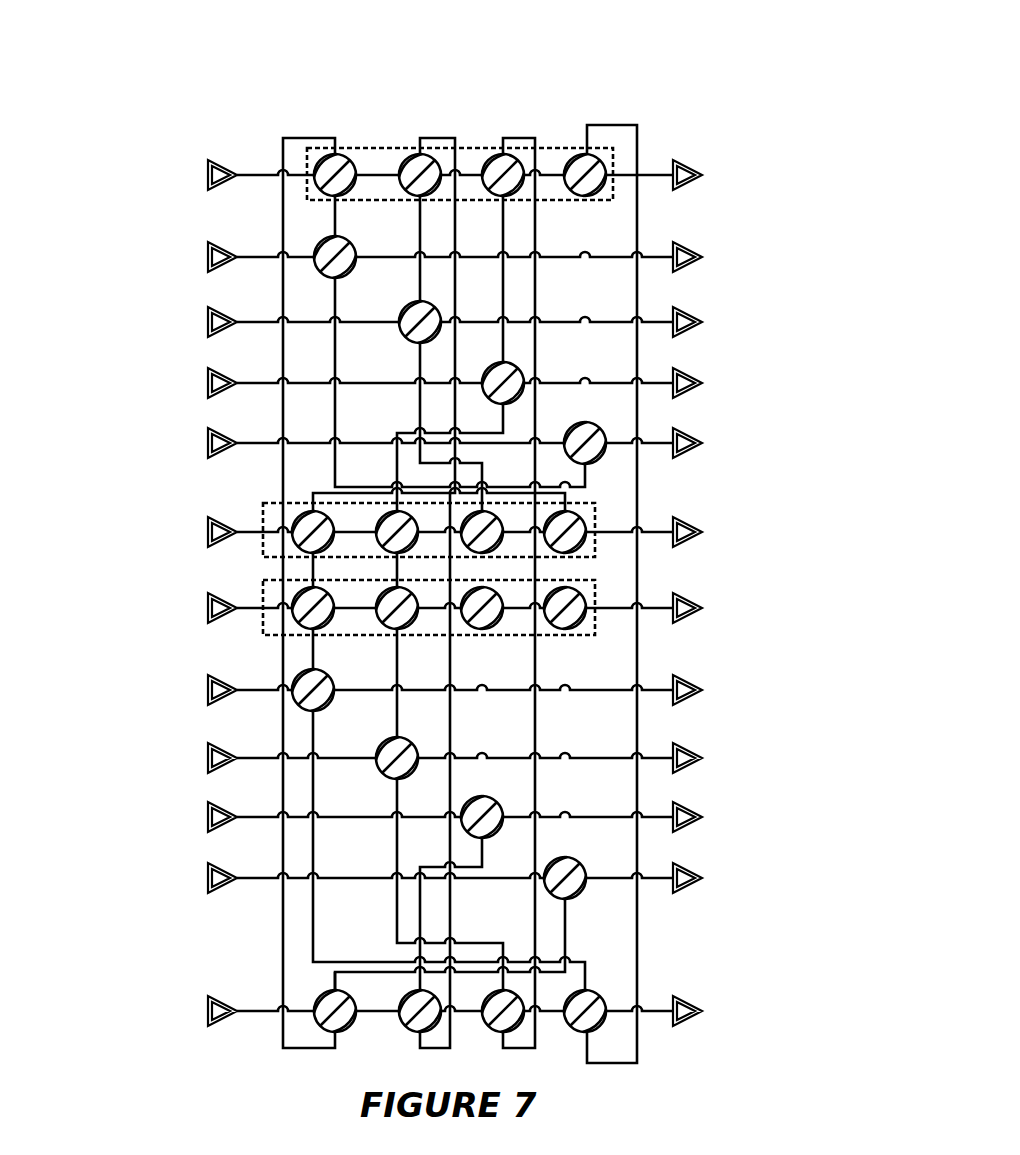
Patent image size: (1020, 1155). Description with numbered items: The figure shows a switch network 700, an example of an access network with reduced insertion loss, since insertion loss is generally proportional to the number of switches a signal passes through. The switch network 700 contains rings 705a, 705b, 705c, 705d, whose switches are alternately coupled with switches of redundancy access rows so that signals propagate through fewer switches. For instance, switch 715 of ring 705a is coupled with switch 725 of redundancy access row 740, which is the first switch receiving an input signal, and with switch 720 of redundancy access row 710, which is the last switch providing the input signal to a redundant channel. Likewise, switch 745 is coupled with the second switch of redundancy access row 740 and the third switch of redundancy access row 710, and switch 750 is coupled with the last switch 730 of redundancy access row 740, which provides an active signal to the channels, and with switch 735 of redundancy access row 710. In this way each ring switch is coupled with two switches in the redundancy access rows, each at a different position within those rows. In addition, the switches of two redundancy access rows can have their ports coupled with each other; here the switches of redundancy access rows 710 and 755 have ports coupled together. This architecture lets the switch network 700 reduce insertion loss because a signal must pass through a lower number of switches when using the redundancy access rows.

The switch network 700 is at (132, 62).
The ring 705a is at (287, 93).
The ring 705b is at (390, 87).
The ring 705c is at (487, 87).
The ring 705d is at (619, 86).
The redundancy access row 710 is at (263, 503).
The switch 715 is at (318, 244).
The switch 720 is at (595, 515).
The switch 725 is at (307, 166).
The switch 730 is at (607, 165).
The switch 735 is at (262, 544).
The redundancy access row 740 is at (307, 150).
The switch 745 is at (398, 333).
The switch 750 is at (602, 428).
The redundancy access row 755 is at (263, 580).